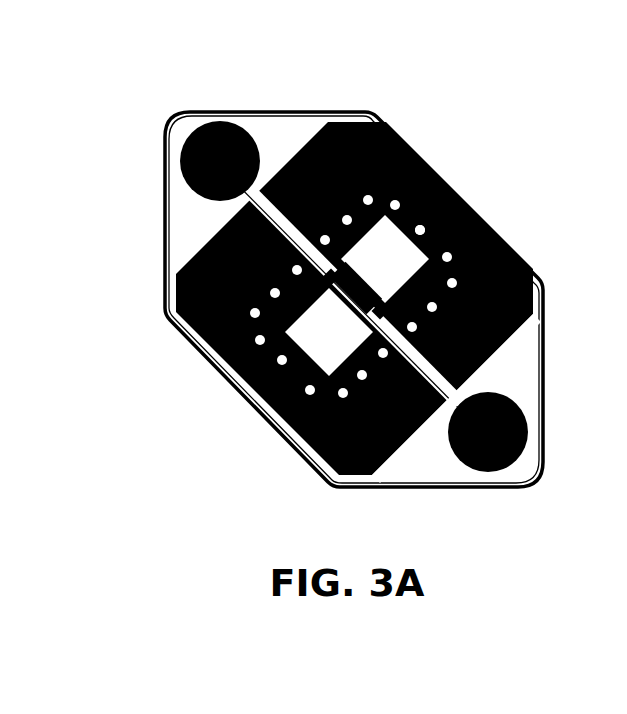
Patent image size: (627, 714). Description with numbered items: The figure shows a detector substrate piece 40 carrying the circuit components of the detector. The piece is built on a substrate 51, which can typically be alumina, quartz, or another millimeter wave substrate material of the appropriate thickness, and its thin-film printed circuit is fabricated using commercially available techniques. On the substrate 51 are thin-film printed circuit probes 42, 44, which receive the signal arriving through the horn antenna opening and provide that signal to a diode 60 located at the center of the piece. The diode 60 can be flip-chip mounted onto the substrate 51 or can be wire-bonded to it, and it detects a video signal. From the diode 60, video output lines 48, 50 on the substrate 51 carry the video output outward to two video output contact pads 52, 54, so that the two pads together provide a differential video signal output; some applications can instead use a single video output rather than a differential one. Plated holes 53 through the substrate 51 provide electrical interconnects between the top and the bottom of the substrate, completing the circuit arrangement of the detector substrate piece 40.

The detector substrate piece 40 is at (477, 118).
The circuit probe 42 is at (376, 316).
The circuit probe 44 is at (328, 279).
The video output line 48 is at (452, 390).
The video output line 50 is at (290, 210).
The substrate 51 is at (188, 213).
The video output contact pad 52 is at (505, 440).
The plated hole 53 is at (425, 230).
The video output contact pad 54 is at (215, 157).
The diode 60 is at (380, 291).